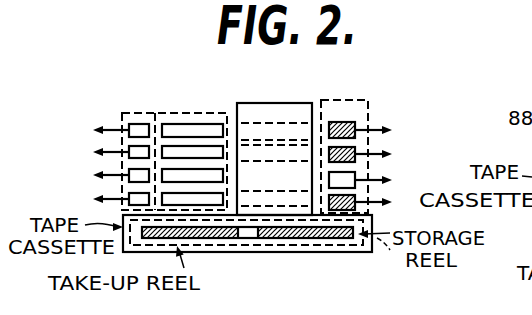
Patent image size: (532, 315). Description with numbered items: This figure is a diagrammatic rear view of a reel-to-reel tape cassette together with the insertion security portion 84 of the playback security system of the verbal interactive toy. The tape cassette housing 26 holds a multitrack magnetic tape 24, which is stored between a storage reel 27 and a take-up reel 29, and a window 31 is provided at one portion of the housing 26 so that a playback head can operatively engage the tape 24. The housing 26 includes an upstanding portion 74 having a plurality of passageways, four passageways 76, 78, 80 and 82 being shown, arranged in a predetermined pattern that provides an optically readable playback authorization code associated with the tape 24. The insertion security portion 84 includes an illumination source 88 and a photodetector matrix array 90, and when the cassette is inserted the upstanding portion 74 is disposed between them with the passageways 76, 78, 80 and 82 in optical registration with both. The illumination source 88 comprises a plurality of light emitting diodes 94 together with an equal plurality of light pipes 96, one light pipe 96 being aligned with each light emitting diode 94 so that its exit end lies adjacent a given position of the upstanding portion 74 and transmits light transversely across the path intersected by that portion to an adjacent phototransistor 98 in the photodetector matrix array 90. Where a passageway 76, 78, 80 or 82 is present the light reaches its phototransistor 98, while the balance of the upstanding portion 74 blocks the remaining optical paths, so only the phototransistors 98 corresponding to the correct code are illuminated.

The tape cassette housing 26 is at (381, 221).
The multitrack magnetic tape 24 is at (207, 242).
The window 31 is at (272, 254).
The take-up reel 29 is at (127, 254).
The storage reel 27 is at (353, 252).
The illumination source 88 is at (133, 112).
The light emitting diodes 94 is at (118, 142).
The light pipes 96 is at (186, 117).
The upstanding portion 74 is at (273, 99).
The passageway 76 is at (241, 124).
The passageway 78 is at (241, 124).
The passageway 80 is at (293, 153).
The passageway 82 is at (305, 191).
The insertion security portion 84 is at (372, 136).
The photodetector matrix array 90 is at (375, 99).
The phototransistors 98 is at (362, 116).